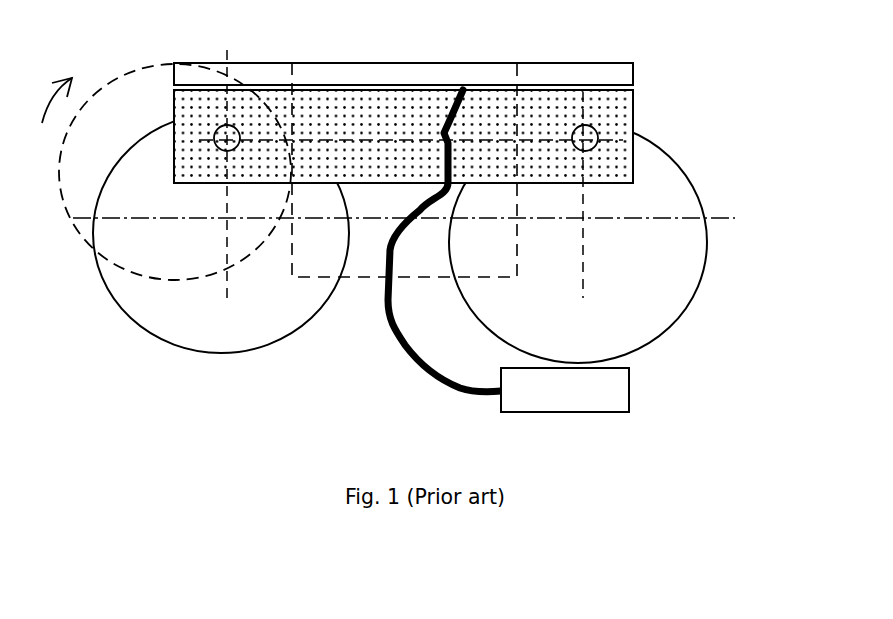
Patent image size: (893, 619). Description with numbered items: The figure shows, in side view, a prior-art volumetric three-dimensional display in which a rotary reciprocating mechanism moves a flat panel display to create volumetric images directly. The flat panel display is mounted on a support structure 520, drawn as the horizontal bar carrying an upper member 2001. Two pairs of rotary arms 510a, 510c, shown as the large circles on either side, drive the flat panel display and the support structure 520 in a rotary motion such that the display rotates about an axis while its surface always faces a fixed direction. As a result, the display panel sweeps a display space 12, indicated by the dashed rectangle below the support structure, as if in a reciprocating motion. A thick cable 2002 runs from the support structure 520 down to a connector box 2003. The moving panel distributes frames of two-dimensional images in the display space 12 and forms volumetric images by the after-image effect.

The holder 2001 is at (570, 57).
The support structure 520 is at (620, 115).
The rotary arm 510a is at (693, 187).
The rotary arm 510c is at (262, 348).
The display space 12 is at (432, 260).
The cable 2002 is at (402, 338).
The connector 2003 is at (629, 385).